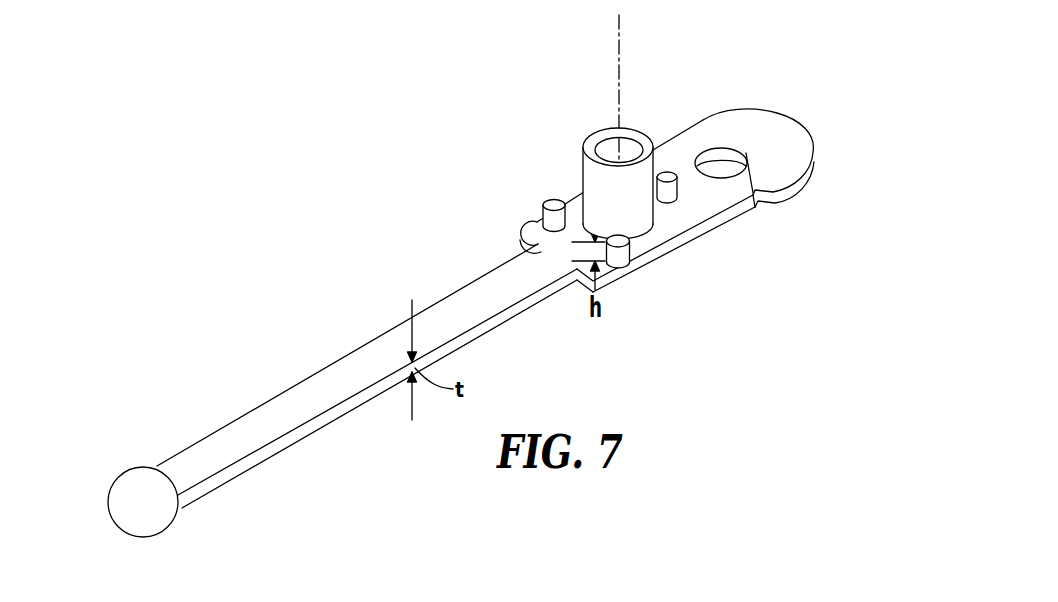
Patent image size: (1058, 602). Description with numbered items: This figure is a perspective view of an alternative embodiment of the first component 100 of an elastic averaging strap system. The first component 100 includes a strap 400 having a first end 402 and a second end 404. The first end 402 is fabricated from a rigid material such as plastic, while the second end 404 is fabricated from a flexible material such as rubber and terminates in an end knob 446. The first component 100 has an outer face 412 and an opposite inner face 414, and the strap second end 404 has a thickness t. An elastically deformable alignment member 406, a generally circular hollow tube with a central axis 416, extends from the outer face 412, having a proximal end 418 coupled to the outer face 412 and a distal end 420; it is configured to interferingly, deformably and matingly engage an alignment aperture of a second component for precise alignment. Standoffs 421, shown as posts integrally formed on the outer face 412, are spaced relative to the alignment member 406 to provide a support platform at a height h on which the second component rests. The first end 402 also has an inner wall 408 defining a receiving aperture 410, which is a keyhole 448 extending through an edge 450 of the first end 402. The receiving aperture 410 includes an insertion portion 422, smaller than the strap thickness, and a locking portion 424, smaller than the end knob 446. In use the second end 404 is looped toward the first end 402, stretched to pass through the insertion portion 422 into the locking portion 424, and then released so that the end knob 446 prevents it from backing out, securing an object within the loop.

The first component 100 is at (303, 103).
The strap 400 is at (527, 217).
The first end 402 is at (677, 127).
The second end 404 is at (283, 378).
The elastically deformable alignment member 406 is at (582, 170).
The inner wall 408 is at (727, 150).
The receiving aperture 410 is at (740, 145).
The outer face 412 is at (535, 219).
The inner face 414 is at (632, 278).
The central axis 416 is at (617, 93).
The proximal end 418 is at (658, 222).
The distal end 420 is at (585, 133).
The standoffs 421 is at (541, 205).
The insertion portion 422 is at (763, 198).
The locking portion 424 is at (732, 162).
The end knob 446 is at (133, 480).
The keyhole 448 is at (784, 184).
The edge 450 is at (707, 230).